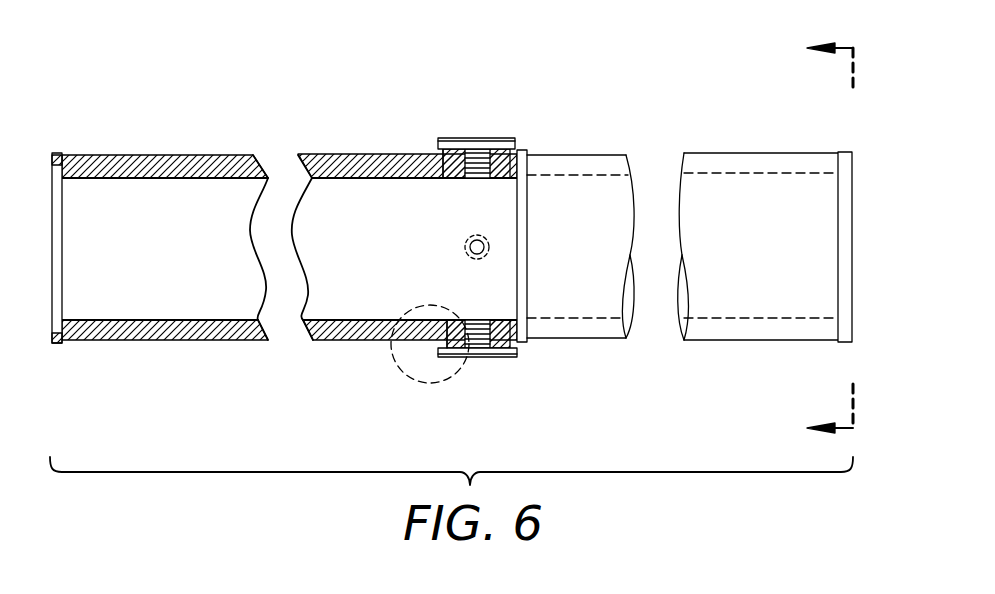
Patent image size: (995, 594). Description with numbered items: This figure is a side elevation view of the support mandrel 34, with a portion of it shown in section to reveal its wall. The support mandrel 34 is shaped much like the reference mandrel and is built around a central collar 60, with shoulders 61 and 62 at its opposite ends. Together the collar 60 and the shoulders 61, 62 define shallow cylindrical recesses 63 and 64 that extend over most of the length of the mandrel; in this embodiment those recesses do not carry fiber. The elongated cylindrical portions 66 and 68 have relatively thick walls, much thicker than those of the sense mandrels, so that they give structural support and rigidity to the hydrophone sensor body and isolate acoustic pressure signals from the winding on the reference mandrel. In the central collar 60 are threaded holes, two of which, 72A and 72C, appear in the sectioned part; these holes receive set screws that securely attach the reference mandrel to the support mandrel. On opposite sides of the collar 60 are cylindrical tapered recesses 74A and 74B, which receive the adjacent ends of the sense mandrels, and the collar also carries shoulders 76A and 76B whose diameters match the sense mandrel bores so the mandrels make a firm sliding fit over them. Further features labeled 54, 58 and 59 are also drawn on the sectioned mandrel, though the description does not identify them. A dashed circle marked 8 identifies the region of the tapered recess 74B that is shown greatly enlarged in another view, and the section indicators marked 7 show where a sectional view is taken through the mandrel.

The section line 7- 7 is at (818, 240).
The detail area of FIG. 8 is at (422, 347).
The support mandrel 34 is at (622, 63).
The tubular member 54 is at (224, 180).
The lower clamp plate 58 is at (507, 357).
The upper clamp plate 59 is at (502, 135).
The central collar 60 is at (477, 128).
The shoulder 61 is at (843, 152).
The shoulder 62 is at (54, 153).
The cylindrical recess 63 is at (838, 341).
The cylindrical recess 64 is at (62, 343).
The elongated cylindrical portion 66 is at (604, 162).
The elongated cylindrical portion 68 is at (173, 162).
The threaded hole 72A is at (473, 143).
The threaded hole 72C is at (476, 352).
The cylindrical tapered recess 74A is at (525, 150).
The cylindrical tapered recess 74B is at (410, 150).
The shoulder 76A is at (520, 344).
The shoulder 76B is at (432, 153).